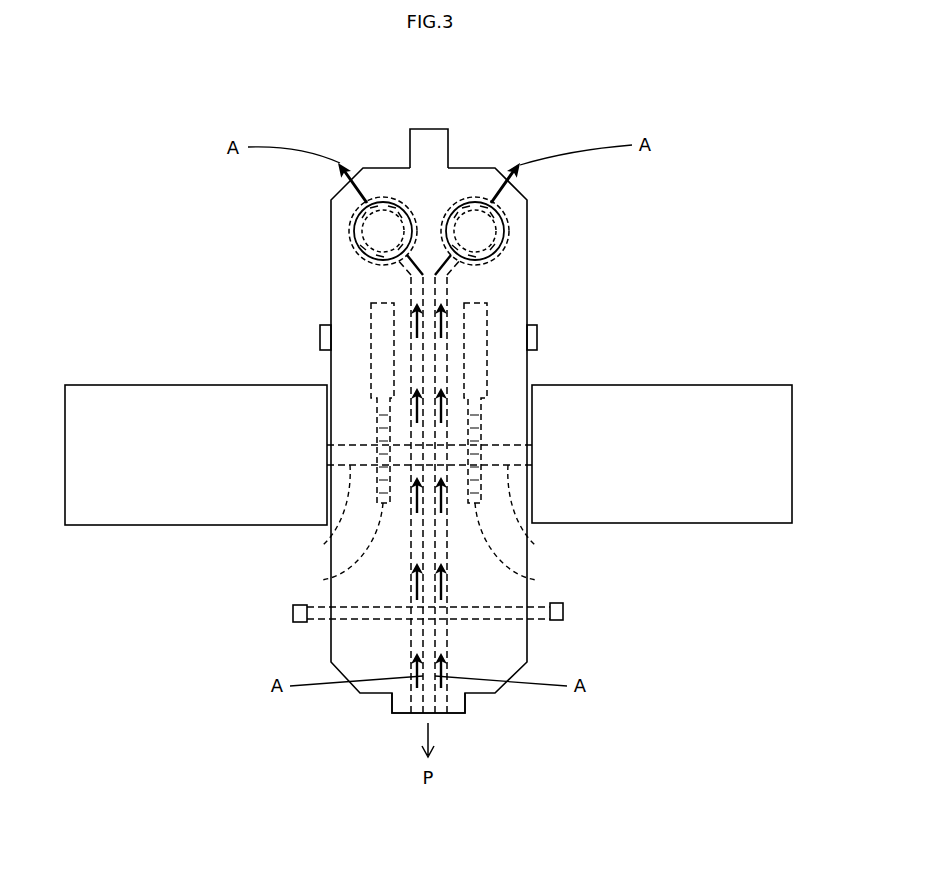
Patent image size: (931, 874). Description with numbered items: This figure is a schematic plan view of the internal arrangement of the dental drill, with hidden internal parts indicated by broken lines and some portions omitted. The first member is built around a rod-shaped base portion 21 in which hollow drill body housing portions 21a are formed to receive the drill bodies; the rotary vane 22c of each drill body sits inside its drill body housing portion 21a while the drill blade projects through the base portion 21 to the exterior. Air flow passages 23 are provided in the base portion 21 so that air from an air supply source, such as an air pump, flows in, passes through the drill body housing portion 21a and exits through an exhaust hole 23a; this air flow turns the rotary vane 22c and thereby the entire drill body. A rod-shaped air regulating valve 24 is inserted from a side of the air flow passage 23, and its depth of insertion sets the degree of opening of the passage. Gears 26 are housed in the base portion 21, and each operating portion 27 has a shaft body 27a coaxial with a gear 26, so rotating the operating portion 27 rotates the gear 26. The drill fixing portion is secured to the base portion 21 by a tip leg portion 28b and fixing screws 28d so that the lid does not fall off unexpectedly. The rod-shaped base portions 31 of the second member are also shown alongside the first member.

The base portion 21 is at (343, 652).
The drill body housing portion 21a is at (375, 236).
The rotary vane 22c is at (358, 252).
The air flow passage 23 is at (413, 713).
The exhaust hole 23a is at (347, 182).
The air regulating valve 24 is at (293, 617).
The gear 26 is at (331, 578).
The operating portion 27 is at (85, 395).
The shaft body 27a is at (333, 528).
The tip leg portion 28b is at (440, 138).
The fixing screw 28d is at (320, 338).
The base portion 31 is at (382, 323).